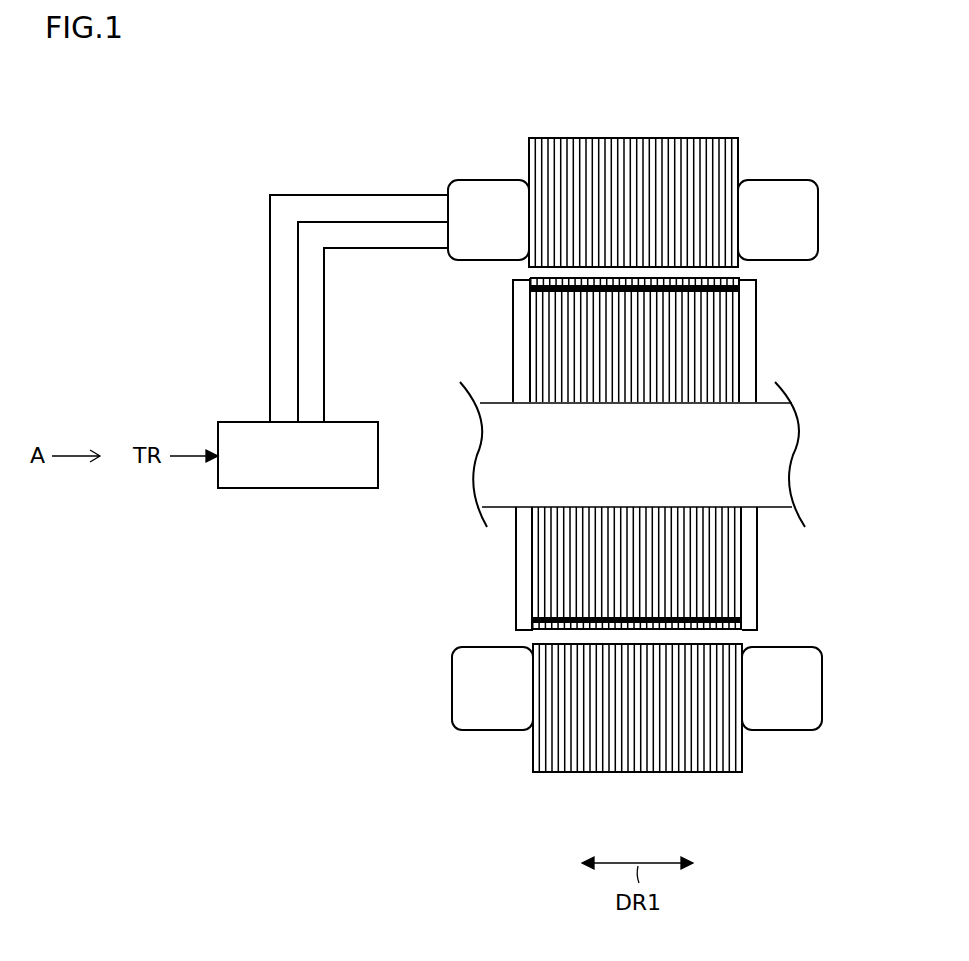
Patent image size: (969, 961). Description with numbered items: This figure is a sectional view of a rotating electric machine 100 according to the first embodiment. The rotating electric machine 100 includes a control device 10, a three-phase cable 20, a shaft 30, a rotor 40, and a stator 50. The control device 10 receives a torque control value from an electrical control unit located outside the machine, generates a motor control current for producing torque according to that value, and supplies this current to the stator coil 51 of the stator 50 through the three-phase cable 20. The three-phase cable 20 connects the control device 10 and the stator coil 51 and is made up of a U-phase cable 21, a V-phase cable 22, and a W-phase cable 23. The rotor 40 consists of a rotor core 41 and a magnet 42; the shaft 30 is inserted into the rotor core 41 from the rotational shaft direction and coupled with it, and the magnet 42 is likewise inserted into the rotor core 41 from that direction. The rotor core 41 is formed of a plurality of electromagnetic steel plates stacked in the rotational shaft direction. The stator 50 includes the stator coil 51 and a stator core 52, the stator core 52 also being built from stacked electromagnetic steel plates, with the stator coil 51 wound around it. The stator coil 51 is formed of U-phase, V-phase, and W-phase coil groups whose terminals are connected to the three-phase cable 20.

The rotating electric machine 100 is at (502, 75).
The control device 10 is at (358, 421).
The 3-phase cable 20 is at (359, 277).
The U-phase cable 21 is at (335, 194).
The V-phase cable 22 is at (310, 221).
The W-phase cable 23 is at (342, 250).
The shaft 30 is at (765, 460).
The rotor 40 is at (661, 456).
The rotor core 41 is at (548, 347).
The magnet 42 is at (752, 285).
The stator 50 is at (658, 455).
The stator coil 51 is at (477, 245).
The stator core 52 is at (682, 148).